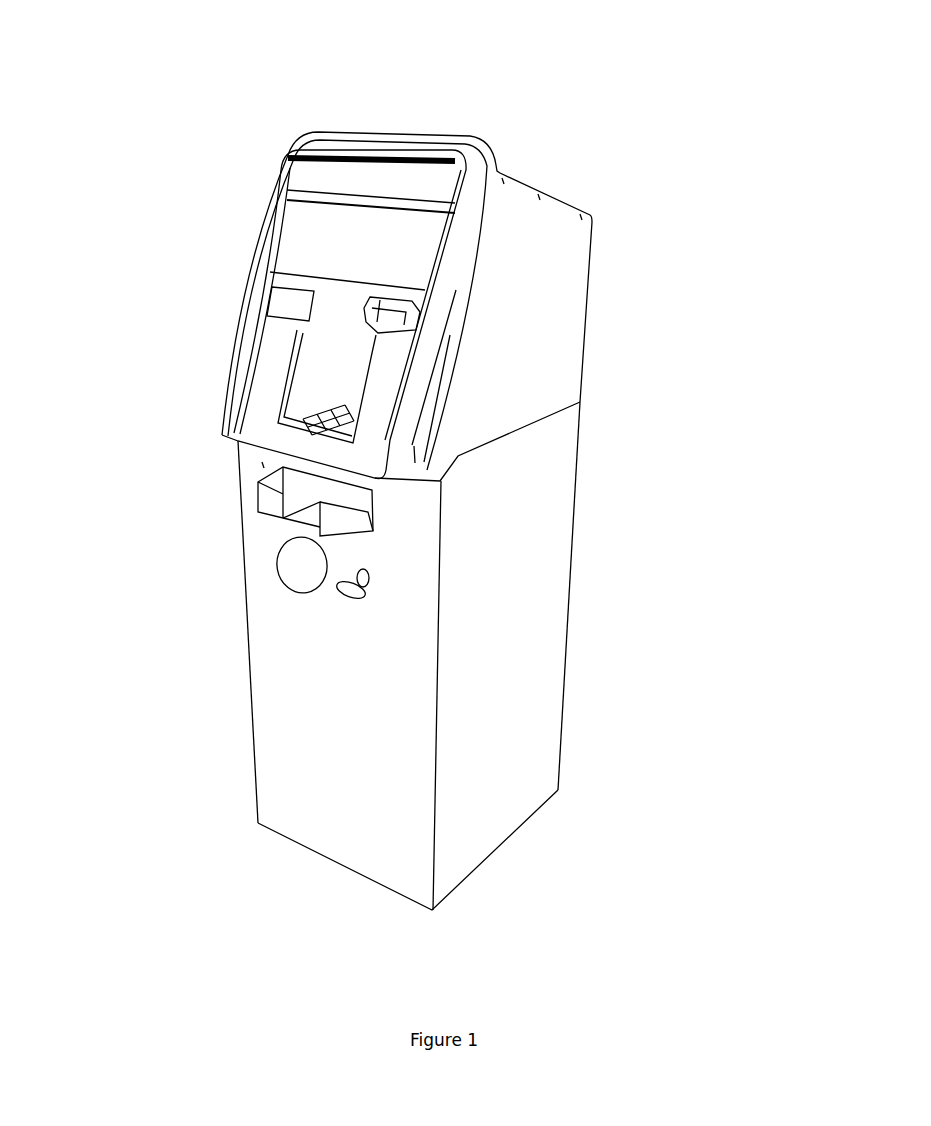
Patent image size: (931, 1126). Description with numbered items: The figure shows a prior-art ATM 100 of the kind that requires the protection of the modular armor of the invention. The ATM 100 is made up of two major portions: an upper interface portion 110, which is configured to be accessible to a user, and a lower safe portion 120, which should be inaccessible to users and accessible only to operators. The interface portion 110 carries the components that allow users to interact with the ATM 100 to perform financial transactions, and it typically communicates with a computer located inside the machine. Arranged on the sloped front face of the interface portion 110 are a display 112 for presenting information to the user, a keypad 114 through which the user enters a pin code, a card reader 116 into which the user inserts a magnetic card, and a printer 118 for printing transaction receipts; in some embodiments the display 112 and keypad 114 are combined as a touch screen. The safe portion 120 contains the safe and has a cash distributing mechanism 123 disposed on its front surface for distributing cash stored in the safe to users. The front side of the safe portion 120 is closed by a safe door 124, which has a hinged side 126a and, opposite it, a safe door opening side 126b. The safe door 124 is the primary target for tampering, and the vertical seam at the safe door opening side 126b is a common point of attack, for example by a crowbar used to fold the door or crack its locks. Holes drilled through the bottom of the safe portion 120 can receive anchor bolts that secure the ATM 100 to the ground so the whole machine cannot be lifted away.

The ATM 100 is at (184, 98).
The interface portion 110 is at (628, 307).
The display 112 is at (323, 238).
The keypad 114 is at (313, 412).
The card reader 116 is at (410, 318).
The printer 118 is at (282, 300).
The safe portion 120 is at (628, 612).
The cash distributing mechanism 123 is at (330, 495).
The safe door 124 is at (320, 675).
The hinged side 126a is at (452, 758).
The safe door opening side 126b is at (248, 747).